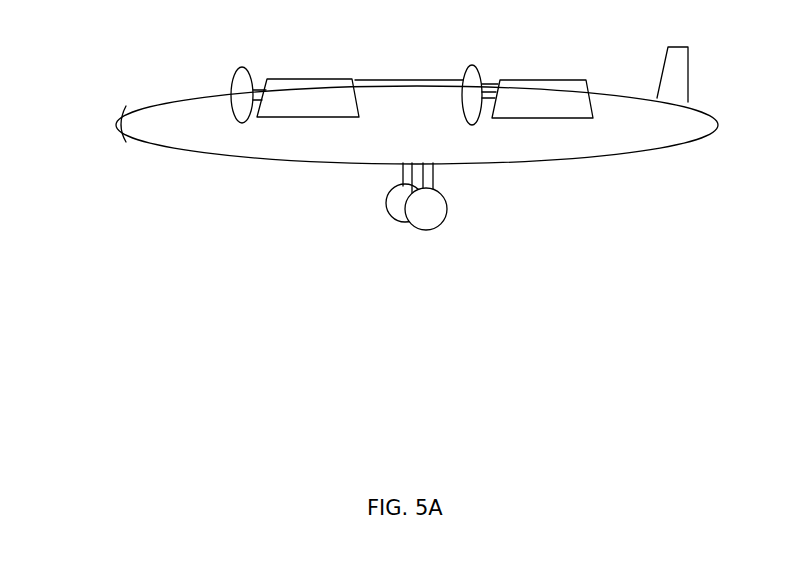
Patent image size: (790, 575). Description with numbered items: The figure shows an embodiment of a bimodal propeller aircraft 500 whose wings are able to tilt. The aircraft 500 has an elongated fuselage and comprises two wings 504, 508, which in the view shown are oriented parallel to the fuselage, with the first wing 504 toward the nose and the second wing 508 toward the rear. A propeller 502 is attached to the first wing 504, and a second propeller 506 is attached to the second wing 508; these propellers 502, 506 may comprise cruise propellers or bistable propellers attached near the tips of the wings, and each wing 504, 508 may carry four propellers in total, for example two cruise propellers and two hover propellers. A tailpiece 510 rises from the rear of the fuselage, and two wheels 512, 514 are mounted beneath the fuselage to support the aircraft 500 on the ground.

The aircraft 500 is at (117, 126).
The propeller 502 is at (233, 91).
The wing 504 is at (330, 43).
The propeller 506 is at (450, 78).
The wing 508 is at (520, 80).
The tailpiece 510 is at (661, 72).
The wheel 512 is at (389, 210).
The wheel 514 is at (449, 222).